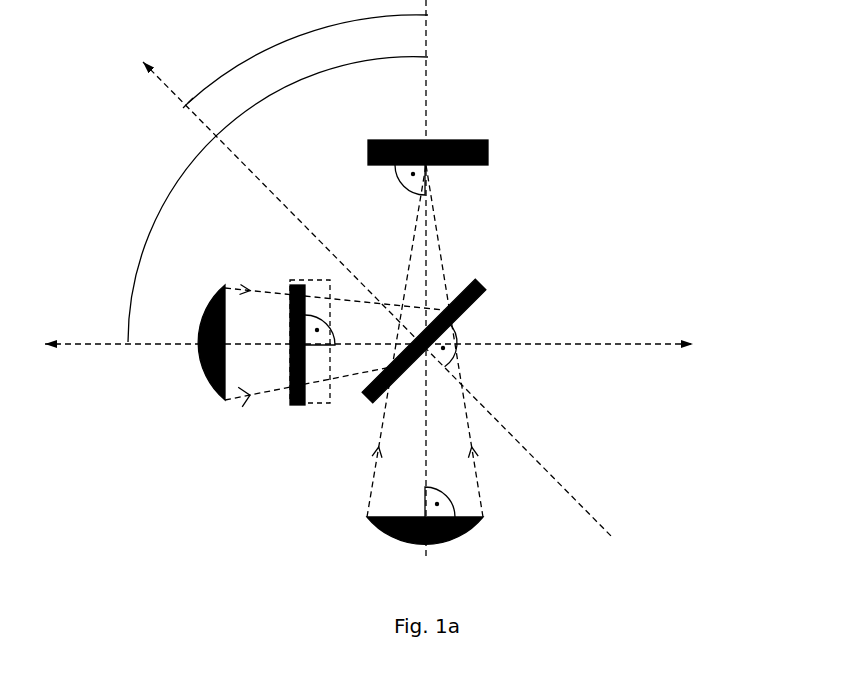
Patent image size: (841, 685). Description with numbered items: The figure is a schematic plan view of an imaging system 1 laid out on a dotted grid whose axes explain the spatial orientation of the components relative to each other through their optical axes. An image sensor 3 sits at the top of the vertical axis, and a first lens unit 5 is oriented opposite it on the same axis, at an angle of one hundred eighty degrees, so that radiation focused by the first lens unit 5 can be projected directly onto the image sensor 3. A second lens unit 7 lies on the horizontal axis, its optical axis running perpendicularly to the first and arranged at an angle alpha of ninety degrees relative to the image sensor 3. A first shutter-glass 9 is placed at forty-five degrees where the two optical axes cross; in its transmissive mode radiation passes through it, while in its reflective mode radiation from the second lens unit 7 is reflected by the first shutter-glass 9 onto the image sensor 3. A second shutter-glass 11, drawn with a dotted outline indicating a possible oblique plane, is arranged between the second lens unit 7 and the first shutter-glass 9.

The imaging system 1 is at (592, 90).
The image sensor 3 is at (470, 125).
The first lens unit 5 is at (490, 513).
The second lens unit 7 is at (235, 282).
The first shutter-glass 9 is at (493, 295).
The second shutter-glass 11 is at (331, 418).